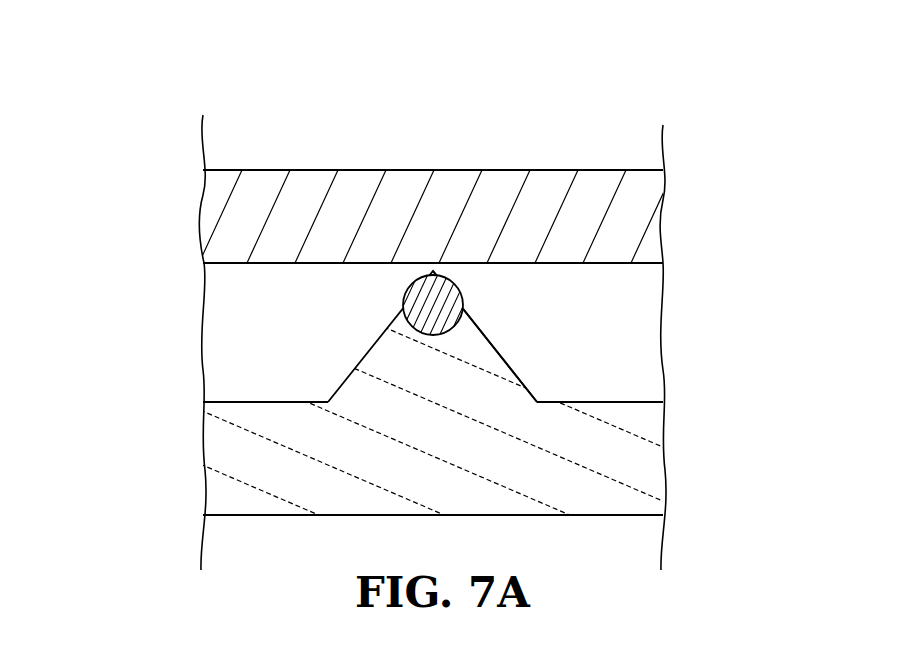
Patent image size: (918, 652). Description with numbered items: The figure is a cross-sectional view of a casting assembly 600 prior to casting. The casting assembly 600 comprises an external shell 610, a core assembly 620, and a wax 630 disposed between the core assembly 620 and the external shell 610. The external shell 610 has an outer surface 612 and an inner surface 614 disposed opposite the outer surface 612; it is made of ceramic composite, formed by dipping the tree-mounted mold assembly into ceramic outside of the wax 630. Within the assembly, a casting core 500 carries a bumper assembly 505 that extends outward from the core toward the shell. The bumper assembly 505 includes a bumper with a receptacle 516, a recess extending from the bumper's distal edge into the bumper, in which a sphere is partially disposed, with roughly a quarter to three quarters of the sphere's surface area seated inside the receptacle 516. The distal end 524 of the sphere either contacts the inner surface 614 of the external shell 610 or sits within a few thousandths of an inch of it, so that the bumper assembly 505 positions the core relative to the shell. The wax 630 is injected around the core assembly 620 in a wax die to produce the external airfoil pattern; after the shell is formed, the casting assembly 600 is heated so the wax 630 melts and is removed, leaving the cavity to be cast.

The cast core 500 is at (407, 432).
The bumper assembly 505 is at (362, 340).
The receptacle 516 is at (433, 335).
The distal end 524 is at (437, 276).
The casting assembly 600 is at (214, 70).
The external shell 610 is at (543, 182).
The outer surface 612 is at (322, 170).
The inner surface 614 is at (620, 277).
The core assembly 620 is at (232, 470).
The wax 630 is at (584, 322).